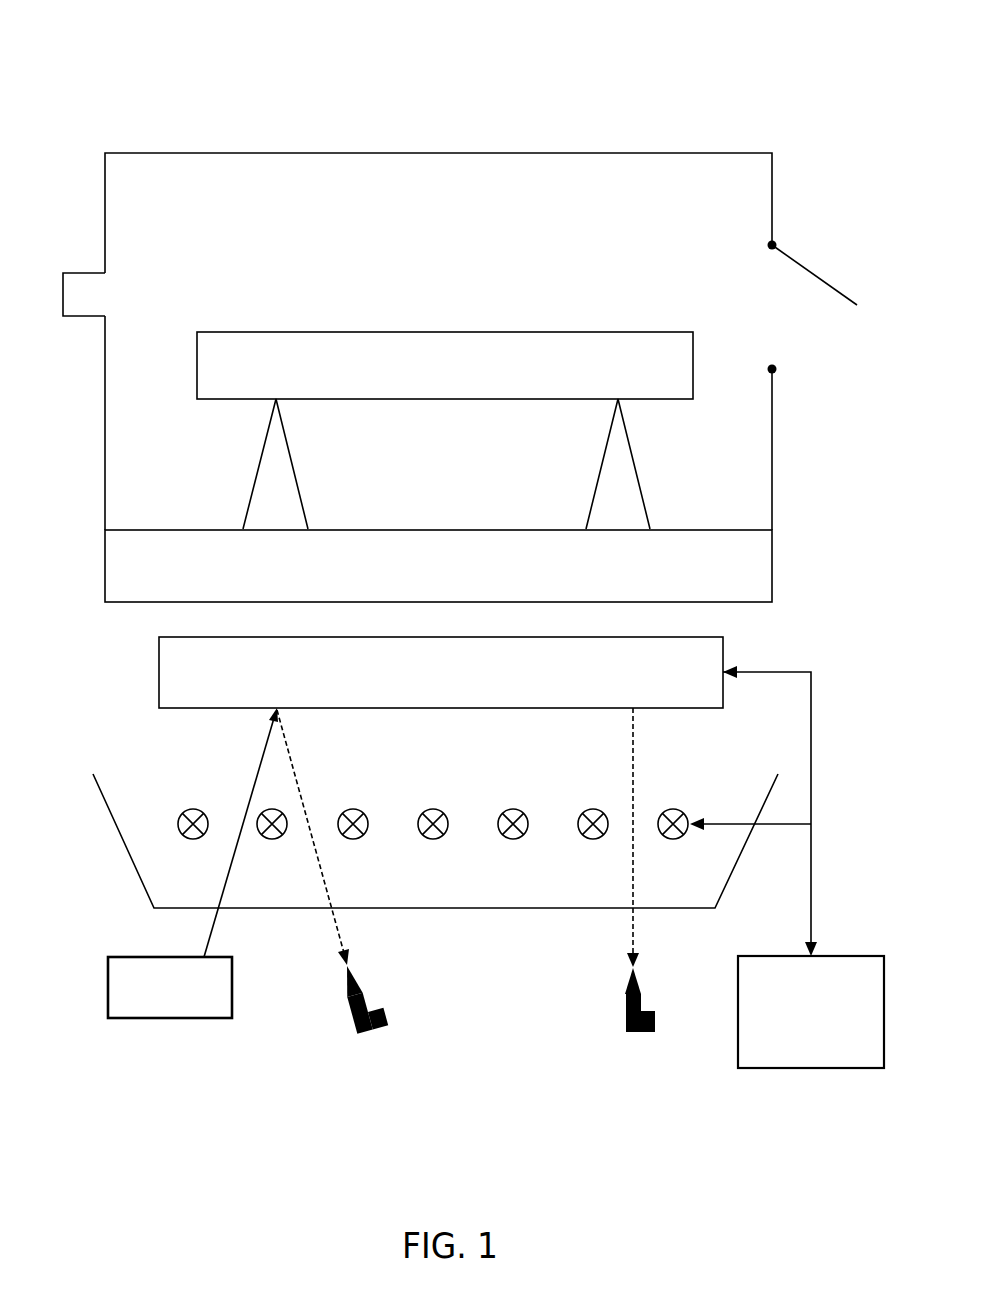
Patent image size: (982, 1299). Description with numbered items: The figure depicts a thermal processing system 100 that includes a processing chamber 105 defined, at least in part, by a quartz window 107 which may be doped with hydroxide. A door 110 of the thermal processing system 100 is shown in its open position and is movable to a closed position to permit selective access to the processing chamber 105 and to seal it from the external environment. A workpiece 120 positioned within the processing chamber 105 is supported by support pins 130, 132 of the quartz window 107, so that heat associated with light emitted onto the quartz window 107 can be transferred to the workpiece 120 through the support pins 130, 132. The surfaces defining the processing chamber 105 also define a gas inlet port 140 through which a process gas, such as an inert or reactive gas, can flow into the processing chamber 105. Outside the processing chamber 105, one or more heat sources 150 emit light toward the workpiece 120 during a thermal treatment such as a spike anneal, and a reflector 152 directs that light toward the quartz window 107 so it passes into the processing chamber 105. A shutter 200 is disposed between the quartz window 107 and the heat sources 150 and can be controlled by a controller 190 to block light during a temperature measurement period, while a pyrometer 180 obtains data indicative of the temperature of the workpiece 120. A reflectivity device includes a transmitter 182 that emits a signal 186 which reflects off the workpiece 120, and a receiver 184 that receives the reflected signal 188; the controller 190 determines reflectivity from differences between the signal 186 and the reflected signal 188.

The thermal processing system 100 is at (569, 92).
The processing chamber 105 is at (258, 217).
The quartz window 107 is at (459, 590).
The door 110 is at (806, 272).
The workpiece 120 is at (468, 391).
The support pin 130 is at (298, 523).
The support pin 132 is at (639, 524).
The gas inlet port 140 is at (87, 272).
The heat sources 150 is at (190, 808).
The reflector 152 is at (148, 897).
The pyrometer 180 is at (643, 1033).
The transmitter 182 is at (191, 999).
The receiver 184 is at (378, 1034).
The signal 186 is at (211, 931).
The reflected signal 188 is at (336, 932).
The controller 190 is at (832, 1037).
The shutter 200 is at (461, 699).